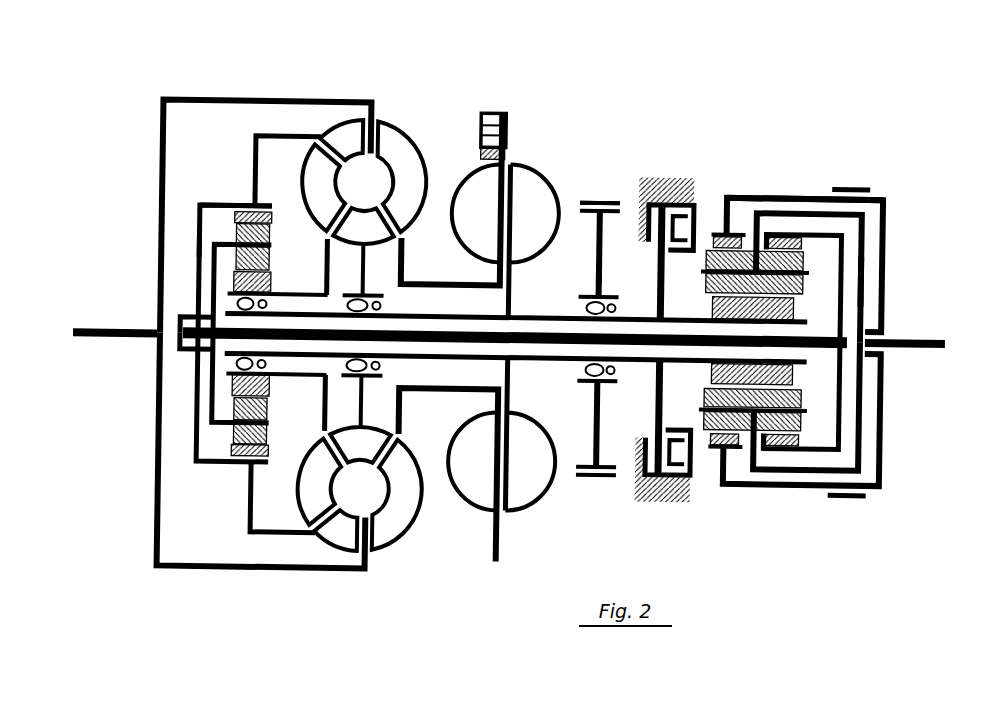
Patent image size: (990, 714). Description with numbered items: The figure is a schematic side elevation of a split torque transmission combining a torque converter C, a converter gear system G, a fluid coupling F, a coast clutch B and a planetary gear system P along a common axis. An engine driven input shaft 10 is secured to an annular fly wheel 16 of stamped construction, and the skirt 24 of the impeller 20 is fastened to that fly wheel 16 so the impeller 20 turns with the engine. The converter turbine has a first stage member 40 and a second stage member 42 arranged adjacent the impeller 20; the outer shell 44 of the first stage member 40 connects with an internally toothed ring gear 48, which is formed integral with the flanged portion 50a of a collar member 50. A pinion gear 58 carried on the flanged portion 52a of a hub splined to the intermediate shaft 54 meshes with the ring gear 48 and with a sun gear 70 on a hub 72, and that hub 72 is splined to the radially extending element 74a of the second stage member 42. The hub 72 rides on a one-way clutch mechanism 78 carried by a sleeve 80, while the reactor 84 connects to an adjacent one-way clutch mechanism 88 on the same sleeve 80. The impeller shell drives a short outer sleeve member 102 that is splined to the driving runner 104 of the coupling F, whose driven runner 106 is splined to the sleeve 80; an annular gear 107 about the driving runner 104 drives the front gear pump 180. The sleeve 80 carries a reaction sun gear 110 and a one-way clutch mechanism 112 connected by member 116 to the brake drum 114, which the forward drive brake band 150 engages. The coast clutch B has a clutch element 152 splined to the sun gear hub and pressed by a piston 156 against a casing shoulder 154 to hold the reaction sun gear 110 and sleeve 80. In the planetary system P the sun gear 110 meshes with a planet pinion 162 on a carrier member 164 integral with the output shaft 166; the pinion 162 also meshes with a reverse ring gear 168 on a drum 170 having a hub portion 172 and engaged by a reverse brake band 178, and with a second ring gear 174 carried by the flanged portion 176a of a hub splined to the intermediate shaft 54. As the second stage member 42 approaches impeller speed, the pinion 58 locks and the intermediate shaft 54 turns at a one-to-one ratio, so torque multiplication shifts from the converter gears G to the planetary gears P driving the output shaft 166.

The input shaft 10 is at (118, 330).
The fly wheel 16 is at (158, 212).
The impeller 20 is at (397, 140).
The skirt 24 is at (308, 102).
The first stage turbine member 40 is at (338, 335).
The second stage turbine member 42 is at (321, 334).
The outer shell 44 is at (252, 168).
The ring gear 48 is at (271, 221).
The collar member 50 is at (178, 322).
The flanged portion 50a is at (195, 243).
The flanged portion 52a is at (210, 278).
The intermediate shaft 54 is at (545, 342).
The pinion gear 58 is at (269, 244).
The sun gear 70 is at (272, 282).
The hub 72 is at (315, 296).
The radially extending element 74a is at (329, 258).
The one-way clutch mechanism 78 is at (264, 305).
The sleeve 80 is at (493, 318).
The reactor 84 is at (362, 335).
The one-way clutch mechanism 88 is at (380, 305).
The outer sleeve member 102 is at (457, 284).
The driving runner 104 is at (474, 337).
The driven runner 106 is at (532, 338).
The annular gear 107 is at (503, 153).
The reaction sun gear 110 is at (706, 308).
The one-way clutch mechanism 112 is at (590, 310).
The brake drum 114 is at (596, 228).
The member 116 is at (596, 274).
The forward drive brake band 150 is at (612, 200).
The clutch element 152 is at (658, 274).
The shoulder 154 is at (657, 175).
The piston 156 is at (687, 222).
The planet pinion 162 is at (800, 260).
The carrier member 164 is at (863, 272).
The output shaft 166 is at (925, 333).
The ring gear 168 is at (722, 196).
The drum 170 is at (790, 193).
The hub portion 172 is at (890, 322).
The ring gear 174 is at (760, 236).
The flanged portion 176a is at (845, 262).
The reverse brake band 178 is at (832, 181).
The front gear pump 180 is at (503, 112).
The converter gear system G is at (212, 214).
The torque converter C is at (386, 125).
The fluid coupling F is at (553, 174).
The coast clutch B is at (679, 180).
The planetary gear system P is at (884, 188).